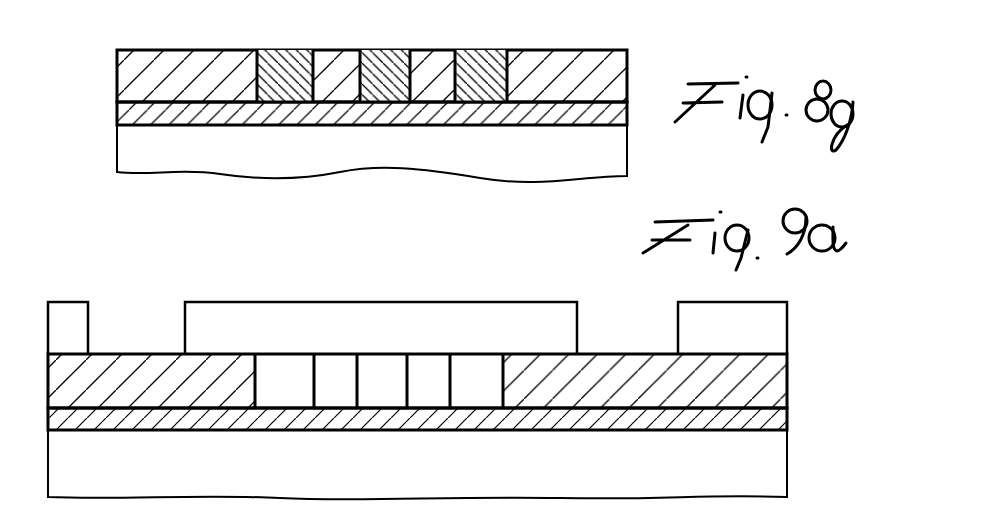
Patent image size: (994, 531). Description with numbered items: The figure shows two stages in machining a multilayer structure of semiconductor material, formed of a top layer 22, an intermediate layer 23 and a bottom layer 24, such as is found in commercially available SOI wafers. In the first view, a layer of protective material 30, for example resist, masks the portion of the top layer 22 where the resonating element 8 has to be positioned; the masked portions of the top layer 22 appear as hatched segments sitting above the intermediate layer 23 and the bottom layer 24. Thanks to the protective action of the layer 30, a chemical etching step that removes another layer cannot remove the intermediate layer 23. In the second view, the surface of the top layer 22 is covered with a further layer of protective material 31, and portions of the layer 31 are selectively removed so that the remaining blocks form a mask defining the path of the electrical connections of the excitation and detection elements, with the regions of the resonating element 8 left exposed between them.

In FIG. 9A, the resonating element 8 is at (342, 395).
In FIG. 8G, the top layer 22 is at (603, 75).
In FIG. 9A, the top layer 22 is at (760, 395).
In FIG. 8G, the intermediate layer 23 is at (133, 110).
In FIG. 9A, the intermediate layer 23 is at (785, 420).
In FIG. 8G, the bottom layer 24 is at (316, 160).
In FIG. 9A, the bottom layer 24 is at (765, 472).
In FIG. 8G, the layer of protective material 30 is at (492, 55).
In FIG. 9A, the layer of protective material 30 is at (498, 470).
In FIG. 9A, the layer of protective material 31 is at (768, 325).